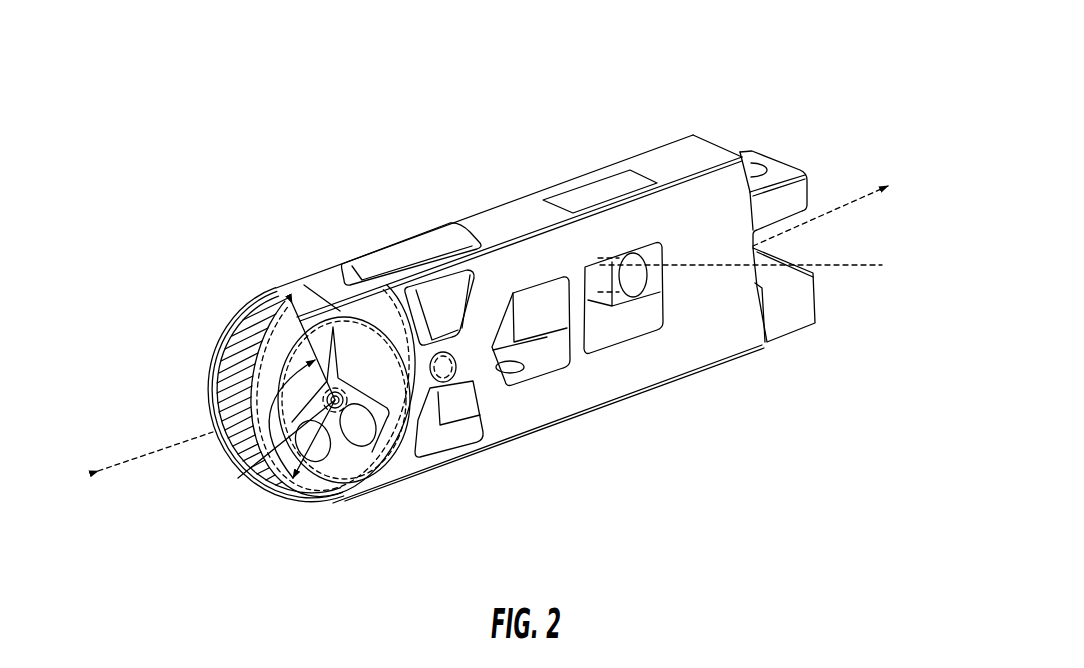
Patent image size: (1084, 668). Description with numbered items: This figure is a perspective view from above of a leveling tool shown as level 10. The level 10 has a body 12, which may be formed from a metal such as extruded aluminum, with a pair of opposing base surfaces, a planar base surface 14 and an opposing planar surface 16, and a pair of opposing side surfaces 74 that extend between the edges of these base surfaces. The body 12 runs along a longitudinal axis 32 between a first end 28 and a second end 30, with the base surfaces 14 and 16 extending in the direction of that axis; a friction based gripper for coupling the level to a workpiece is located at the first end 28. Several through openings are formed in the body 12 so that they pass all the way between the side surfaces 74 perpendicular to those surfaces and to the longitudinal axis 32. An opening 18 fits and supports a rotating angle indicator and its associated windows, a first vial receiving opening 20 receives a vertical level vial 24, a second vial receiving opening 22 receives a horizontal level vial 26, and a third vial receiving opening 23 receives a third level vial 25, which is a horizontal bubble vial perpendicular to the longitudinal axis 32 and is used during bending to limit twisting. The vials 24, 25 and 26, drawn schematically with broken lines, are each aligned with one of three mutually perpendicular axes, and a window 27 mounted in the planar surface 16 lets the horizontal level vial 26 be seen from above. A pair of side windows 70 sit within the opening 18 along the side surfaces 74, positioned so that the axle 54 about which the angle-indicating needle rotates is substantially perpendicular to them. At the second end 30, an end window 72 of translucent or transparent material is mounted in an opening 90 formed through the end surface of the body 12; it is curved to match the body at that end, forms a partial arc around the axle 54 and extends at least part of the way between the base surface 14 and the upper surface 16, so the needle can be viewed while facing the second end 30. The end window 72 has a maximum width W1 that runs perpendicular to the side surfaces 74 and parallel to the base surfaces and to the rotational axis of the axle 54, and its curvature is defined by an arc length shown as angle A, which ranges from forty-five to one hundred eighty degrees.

The level 10 is at (828, 205).
The body 12 is at (500, 423).
The planar base surface 14 is at (668, 387).
The planar surface 16 is at (661, 166).
The opening 18 is at (372, 450).
The first vial receiving opening 20 is at (540, 362).
The second vial receiving opening 22 is at (608, 333).
The third vial receiving opening 23 is at (443, 393).
The vertical level vial 24 is at (520, 363).
The third level vial 25 is at (445, 335).
The horizontal level vial 26 is at (754, 266).
The window 27 is at (600, 190).
The first end 28 is at (777, 115).
The second end 30 is at (178, 420).
The longitudinal axis 32 is at (873, 203).
The axle 54 is at (340, 412).
The side windows 70 is at (348, 352).
The end window 72 is at (235, 347).
The side surfaces 74 is at (723, 347).
The opening 90 is at (210, 370).
The angle A is at (238, 478).
The maximum width W1 is at (246, 407).